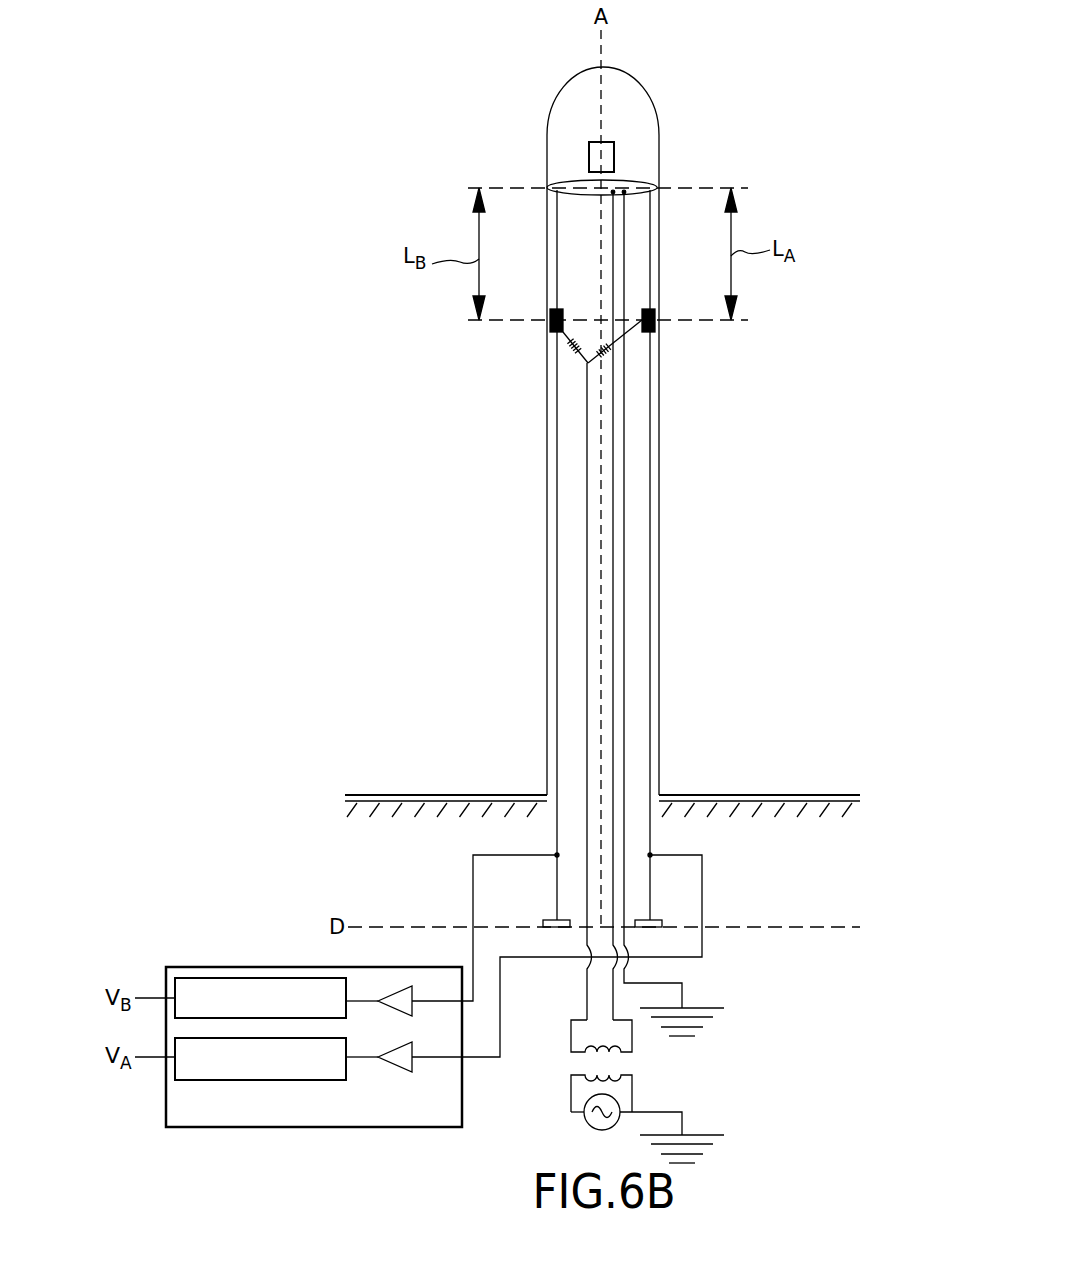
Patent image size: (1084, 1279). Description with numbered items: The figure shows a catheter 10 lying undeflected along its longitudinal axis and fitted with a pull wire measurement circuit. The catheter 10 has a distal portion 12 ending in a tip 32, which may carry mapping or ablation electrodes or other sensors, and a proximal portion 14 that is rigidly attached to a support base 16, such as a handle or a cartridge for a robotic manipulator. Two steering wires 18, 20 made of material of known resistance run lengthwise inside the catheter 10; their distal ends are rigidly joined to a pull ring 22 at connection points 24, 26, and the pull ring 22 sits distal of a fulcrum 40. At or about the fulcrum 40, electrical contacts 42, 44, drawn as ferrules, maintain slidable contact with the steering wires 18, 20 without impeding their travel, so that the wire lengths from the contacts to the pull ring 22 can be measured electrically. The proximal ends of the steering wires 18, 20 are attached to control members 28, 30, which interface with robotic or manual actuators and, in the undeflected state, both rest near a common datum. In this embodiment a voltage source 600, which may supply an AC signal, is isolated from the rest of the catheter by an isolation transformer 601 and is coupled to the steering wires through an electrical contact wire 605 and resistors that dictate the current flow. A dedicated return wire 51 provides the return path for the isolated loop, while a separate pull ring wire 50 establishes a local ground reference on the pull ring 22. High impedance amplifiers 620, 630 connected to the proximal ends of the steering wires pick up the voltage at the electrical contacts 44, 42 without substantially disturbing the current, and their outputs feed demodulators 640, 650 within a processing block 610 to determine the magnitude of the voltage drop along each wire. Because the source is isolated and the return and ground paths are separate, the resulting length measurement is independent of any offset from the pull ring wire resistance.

The catheter 10 is at (418, 208).
The distal portion 12 is at (648, 101).
The proximal portion 14 is at (695, 598).
The support base 16 is at (796, 793).
The steering wire 18 is at (650, 396).
The steering wire 20 is at (557, 608).
The pull ring 22 is at (648, 180).
The connection point 24 is at (652, 192).
The connection point 26 is at (549, 180).
The control member 28 is at (653, 918).
The control member 30 is at (549, 918).
The tip 32 is at (622, 80).
The fulcrum 40 is at (590, 320).
The electrical contact 42 is at (655, 308).
The electrical contact 44 is at (550, 313).
The pull ring wire 50 is at (624, 476).
The return wire 51 is at (613, 540).
The voltage source 600 is at (588, 1122).
The isolation transformer 601 is at (576, 1054).
The electrical contact wire 605 is at (587, 460).
The signal processing circuit 610 is at (268, 967).
The high impedance amplifier 620 is at (400, 987).
The high impedance amplifier 630 is at (402, 1072).
The demodulator 640 is at (178, 978).
The demodulator 650 is at (228, 1080).